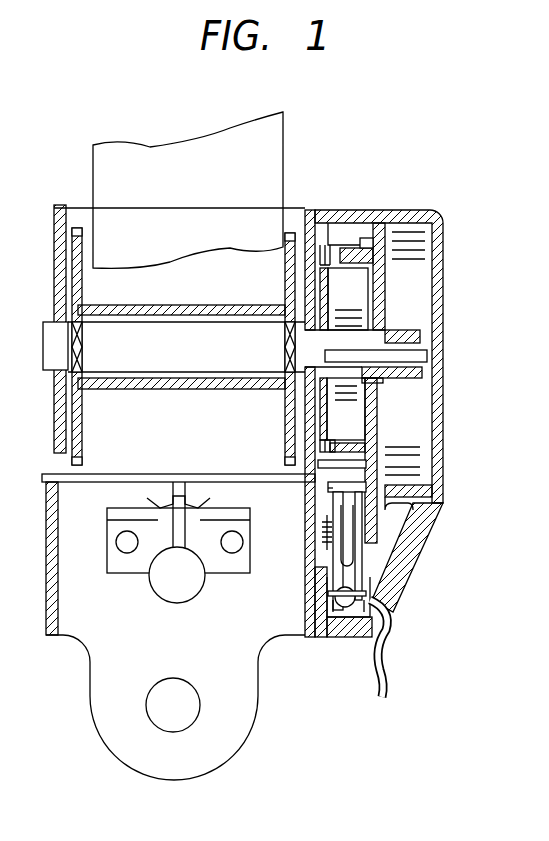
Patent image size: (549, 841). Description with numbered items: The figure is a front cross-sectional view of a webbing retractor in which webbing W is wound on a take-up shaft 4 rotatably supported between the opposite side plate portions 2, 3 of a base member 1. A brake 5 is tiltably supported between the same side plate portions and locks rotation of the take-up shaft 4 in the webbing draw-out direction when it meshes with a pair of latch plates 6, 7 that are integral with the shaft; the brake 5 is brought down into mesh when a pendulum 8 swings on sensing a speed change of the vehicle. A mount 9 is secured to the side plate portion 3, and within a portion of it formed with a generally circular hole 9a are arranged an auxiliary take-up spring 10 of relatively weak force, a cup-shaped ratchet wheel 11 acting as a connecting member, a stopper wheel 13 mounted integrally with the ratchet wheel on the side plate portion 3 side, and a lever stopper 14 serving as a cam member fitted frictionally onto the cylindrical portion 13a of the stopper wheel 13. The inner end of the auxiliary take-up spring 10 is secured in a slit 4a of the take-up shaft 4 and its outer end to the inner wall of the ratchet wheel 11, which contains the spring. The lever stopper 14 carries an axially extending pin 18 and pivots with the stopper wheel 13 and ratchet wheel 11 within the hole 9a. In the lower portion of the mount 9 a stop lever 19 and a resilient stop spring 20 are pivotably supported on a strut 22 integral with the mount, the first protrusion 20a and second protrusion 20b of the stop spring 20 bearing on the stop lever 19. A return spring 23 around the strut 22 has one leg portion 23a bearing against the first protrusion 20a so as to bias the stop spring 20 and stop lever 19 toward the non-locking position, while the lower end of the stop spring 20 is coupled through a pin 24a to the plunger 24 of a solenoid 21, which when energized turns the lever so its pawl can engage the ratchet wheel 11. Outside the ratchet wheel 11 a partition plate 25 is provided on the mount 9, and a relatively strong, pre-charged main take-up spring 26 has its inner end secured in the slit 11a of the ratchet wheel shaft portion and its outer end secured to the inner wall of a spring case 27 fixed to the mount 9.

The webbing W is at (133, 152).
The base member 1 is at (258, 736).
The side plate portion 2 is at (62, 206).
The side plate portion 3 is at (308, 212).
The take-up shaft 4 is at (48, 349).
The slit 4a is at (395, 358).
The brake 5 is at (42, 478).
The latch plate 6 is at (74, 250).
The latch plate 7 is at (287, 286).
The pendulum 8 is at (165, 590).
The mount 9 is at (345, 226).
The circular hole 9a is at (325, 242).
The auxiliary take-up spring 10 is at (358, 322).
The ratchet wheel 11 is at (364, 250).
The slit 11a is at (400, 338).
The stopper wheel 13 is at (332, 312).
The cylindrical portion 13a is at (323, 410).
The lever stopper 14 is at (378, 458).
The pin 18 is at (366, 464).
The stop lever 19 is at (352, 588).
The stop spring 20 is at (338, 575).
The first protrusion 20a is at (336, 505).
The second protrusion 20b is at (340, 532).
The solenoid 21 is at (342, 620).
The strut 22 is at (358, 550).
The return spring 23 is at (325, 536).
The leg portion 23a is at (333, 488).
The plunger 24 is at (357, 622).
The pin 24a is at (337, 595).
The partition plate 25 is at (379, 224).
The main take-up spring 26 is at (410, 240).
The spring case 27 is at (412, 222).